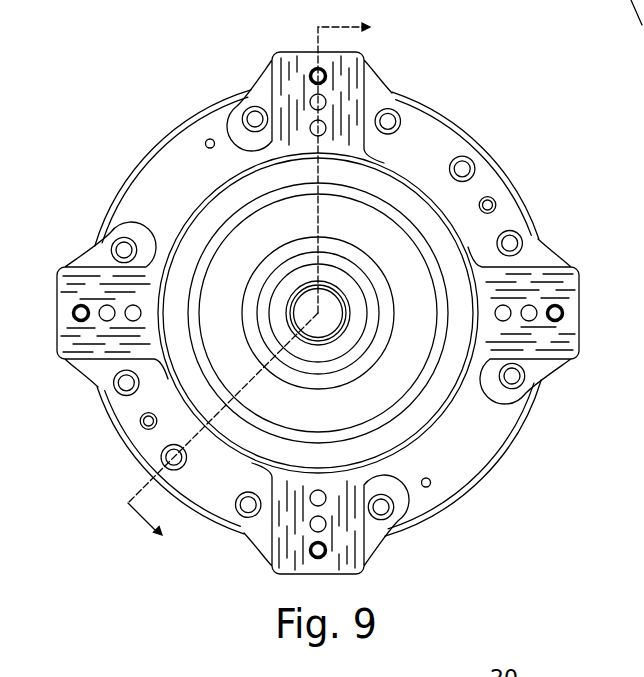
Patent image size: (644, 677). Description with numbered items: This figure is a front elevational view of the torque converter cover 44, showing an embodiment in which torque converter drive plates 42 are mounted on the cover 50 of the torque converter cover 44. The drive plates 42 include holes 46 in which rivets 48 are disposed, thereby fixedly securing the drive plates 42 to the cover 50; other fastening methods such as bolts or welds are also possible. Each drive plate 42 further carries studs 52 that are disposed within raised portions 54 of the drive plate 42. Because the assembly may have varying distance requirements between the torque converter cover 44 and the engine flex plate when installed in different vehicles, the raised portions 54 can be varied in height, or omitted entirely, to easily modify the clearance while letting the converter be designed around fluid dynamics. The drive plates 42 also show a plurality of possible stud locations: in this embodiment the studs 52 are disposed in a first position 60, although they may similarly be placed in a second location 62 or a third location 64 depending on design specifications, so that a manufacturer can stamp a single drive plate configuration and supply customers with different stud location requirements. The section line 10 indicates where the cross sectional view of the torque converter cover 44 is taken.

The section line 10- 10 is at (267, 288).
The torque converter drive plates 42 is at (484, 180).
The torque converter cover 44 is at (477, 101).
The holes 46 is at (522, 237).
The rivets 48 is at (542, 240).
The cover 50 is at (487, 465).
The studs 52 is at (565, 320).
The raised portions 54 is at (332, 93).
The first position 60 is at (79, 305).
The second location 62 is at (106, 305).
The third location 64 is at (132, 305).